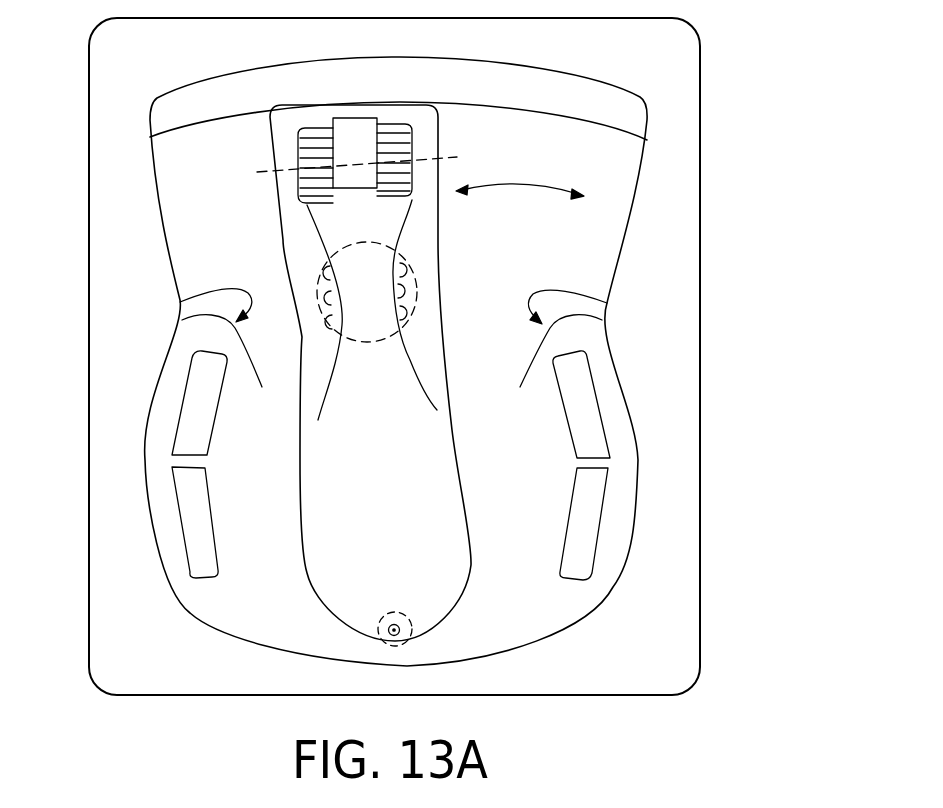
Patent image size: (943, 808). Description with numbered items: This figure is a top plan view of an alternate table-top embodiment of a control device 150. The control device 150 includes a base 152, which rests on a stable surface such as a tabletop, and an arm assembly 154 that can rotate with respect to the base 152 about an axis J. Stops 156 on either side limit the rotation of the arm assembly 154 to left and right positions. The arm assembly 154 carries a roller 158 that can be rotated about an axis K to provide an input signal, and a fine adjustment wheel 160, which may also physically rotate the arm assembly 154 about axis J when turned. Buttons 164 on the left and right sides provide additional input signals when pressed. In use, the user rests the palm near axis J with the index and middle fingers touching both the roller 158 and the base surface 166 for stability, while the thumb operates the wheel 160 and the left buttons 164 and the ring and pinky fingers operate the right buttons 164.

The control device 150 is at (730, 86).
The base 152 is at (183, 253).
The arm assembly 154 is at (440, 456).
The stops 156 is at (181, 301).
The roller 158 is at (388, 153).
The fine adjustment wheel 160 is at (410, 306).
The buttons 164 is at (187, 498).
The base surface 166 is at (408, 96).